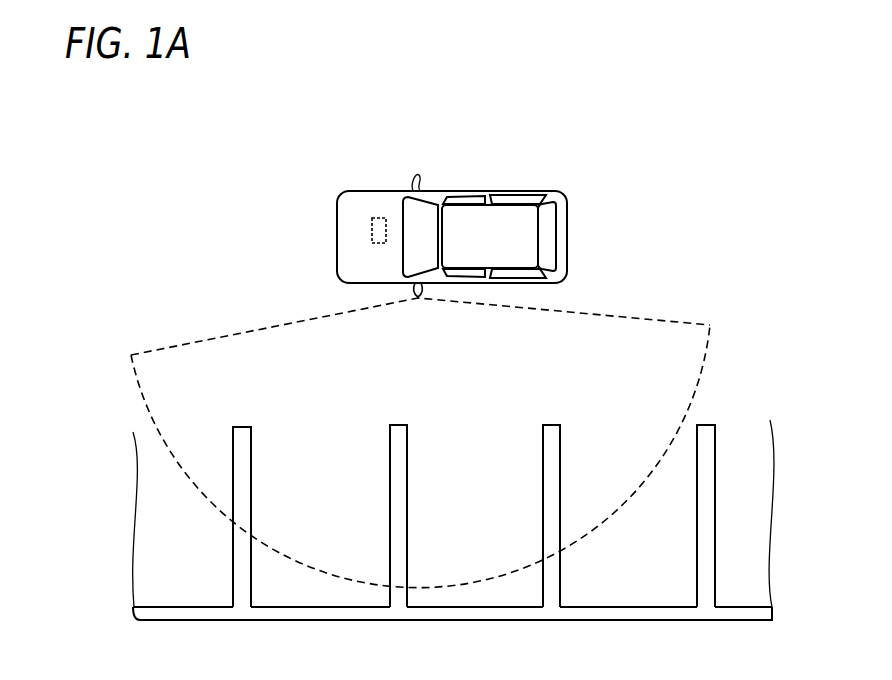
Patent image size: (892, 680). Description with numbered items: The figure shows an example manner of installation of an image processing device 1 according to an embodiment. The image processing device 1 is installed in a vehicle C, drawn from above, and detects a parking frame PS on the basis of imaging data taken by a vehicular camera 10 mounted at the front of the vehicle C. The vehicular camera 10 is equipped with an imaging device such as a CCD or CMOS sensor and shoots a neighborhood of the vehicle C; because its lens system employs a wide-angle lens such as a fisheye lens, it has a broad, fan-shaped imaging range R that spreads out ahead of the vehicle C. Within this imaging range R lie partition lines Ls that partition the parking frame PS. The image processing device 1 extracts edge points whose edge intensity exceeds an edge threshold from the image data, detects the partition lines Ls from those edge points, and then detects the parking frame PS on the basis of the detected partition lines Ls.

The image processing device 1 is at (380, 217).
The vehicle C is at (552, 190).
The vehicular camera 10 is at (418, 300).
The imaging range R is at (621, 318).
The partition lines Ls is at (402, 424).
The parking frame PS is at (499, 458).